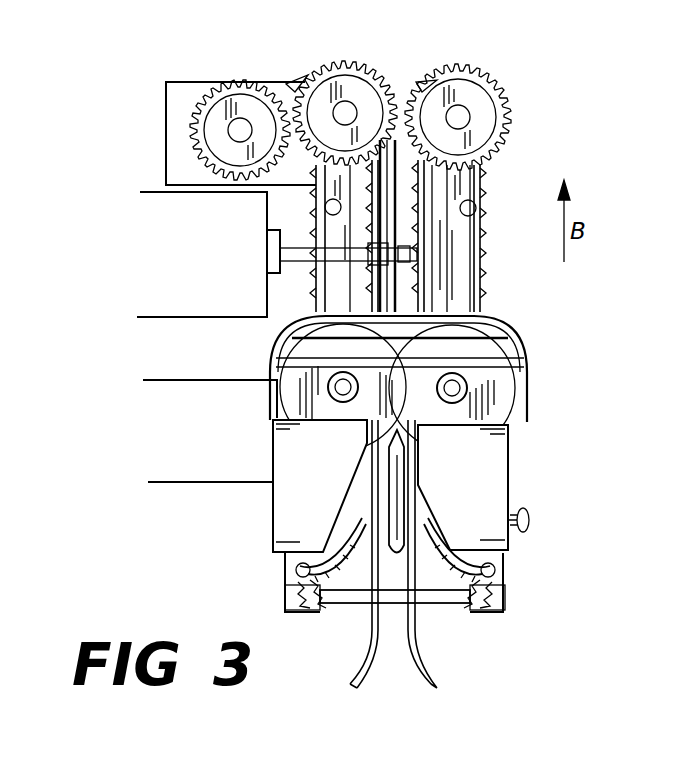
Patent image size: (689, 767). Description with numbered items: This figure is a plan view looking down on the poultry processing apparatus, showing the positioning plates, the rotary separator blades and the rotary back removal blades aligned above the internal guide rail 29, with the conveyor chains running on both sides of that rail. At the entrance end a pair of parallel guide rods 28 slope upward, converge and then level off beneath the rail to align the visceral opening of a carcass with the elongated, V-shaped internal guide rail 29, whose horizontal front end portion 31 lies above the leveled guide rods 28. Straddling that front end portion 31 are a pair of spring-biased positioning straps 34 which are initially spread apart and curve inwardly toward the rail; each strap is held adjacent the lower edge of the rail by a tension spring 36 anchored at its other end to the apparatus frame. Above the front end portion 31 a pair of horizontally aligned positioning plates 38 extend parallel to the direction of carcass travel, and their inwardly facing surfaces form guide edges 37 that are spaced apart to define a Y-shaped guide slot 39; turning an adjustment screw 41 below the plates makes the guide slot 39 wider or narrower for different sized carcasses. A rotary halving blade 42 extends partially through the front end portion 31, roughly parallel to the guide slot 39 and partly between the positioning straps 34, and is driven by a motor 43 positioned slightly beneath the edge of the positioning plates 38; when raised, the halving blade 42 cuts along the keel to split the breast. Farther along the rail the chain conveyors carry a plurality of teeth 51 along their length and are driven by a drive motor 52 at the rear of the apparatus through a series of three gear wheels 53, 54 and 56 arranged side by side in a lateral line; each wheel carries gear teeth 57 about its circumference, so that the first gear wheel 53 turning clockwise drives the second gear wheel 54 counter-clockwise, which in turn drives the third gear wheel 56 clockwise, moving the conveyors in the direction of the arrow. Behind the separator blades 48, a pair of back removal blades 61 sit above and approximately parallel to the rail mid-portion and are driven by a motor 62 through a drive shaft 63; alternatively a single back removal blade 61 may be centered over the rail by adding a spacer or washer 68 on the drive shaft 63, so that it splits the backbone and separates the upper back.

The guide rods 28 is at (414, 660).
The internal guide rail 29 is at (486, 303).
The front end portion 31 is at (364, 600).
The positioning straps 34 is at (296, 570).
The tension spring 36 is at (292, 588).
The guide edges 37 is at (348, 522).
The positioning plates 38 is at (326, 478).
The Y-shaped guide slot 39 is at (370, 478).
The adjustment screw 41 is at (527, 512).
The rotary halving blade 42 is at (404, 487).
The motor 43 is at (213, 457).
The separator blades 48 is at (340, 414).
The teeth 51 is at (486, 245).
The drive motor 52 is at (166, 142).
The first gear wheel 53 is at (223, 104).
The second gear wheel 54 is at (344, 80).
The third gear wheel 56 is at (464, 90).
The gear teeth 57 is at (290, 94).
The back removal blades 61 is at (483, 262).
The motor 62 is at (208, 258).
The drive shaft 63 is at (303, 250).
The spacer or washer 68 is at (288, 272).